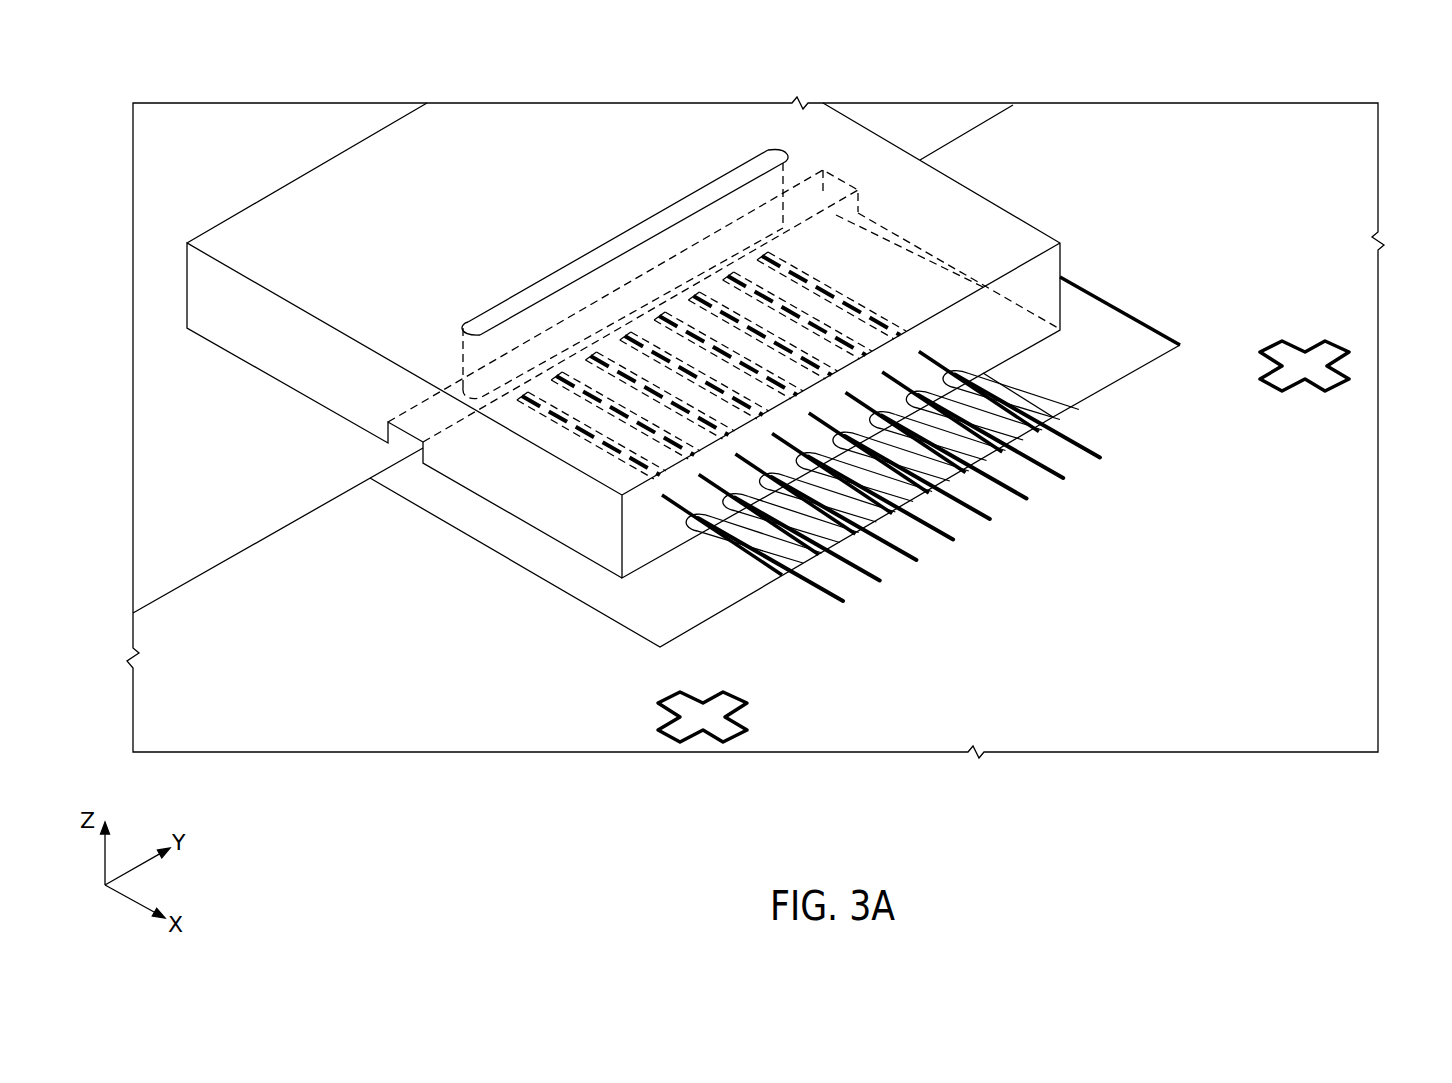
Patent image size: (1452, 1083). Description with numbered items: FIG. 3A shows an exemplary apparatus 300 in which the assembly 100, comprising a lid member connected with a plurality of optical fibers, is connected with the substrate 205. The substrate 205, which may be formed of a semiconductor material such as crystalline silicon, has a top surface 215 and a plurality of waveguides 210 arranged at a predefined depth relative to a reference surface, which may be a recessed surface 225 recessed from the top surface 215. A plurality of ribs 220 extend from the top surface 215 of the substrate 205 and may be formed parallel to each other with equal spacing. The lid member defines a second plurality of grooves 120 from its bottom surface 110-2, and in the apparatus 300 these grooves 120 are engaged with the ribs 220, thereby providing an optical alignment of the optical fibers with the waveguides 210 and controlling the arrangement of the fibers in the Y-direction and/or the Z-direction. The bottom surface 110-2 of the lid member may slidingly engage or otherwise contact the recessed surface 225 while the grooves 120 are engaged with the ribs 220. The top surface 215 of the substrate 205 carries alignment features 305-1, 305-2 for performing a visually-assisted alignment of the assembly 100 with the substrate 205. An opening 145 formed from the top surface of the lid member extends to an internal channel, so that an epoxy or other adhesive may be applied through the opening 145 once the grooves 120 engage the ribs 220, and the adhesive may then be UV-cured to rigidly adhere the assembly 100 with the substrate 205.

The apparatus 300 is at (240, 73).
The assembly 100 is at (623, 313).
The opening 145 is at (740, 170).
The top surface 215 is at (1098, 133).
The alignment feature 305-1 is at (740, 740).
The alignment feature 305-2 is at (1345, 343).
The second plurality of grooves 120 is at (983, 358).
The bottom surface 110-2 is at (492, 505).
The recessed surface 225 is at (567, 576).
The plurality of ribs 220 is at (1120, 445).
The plurality of waveguides 210 is at (870, 464).
The substrate 205 is at (465, 765).